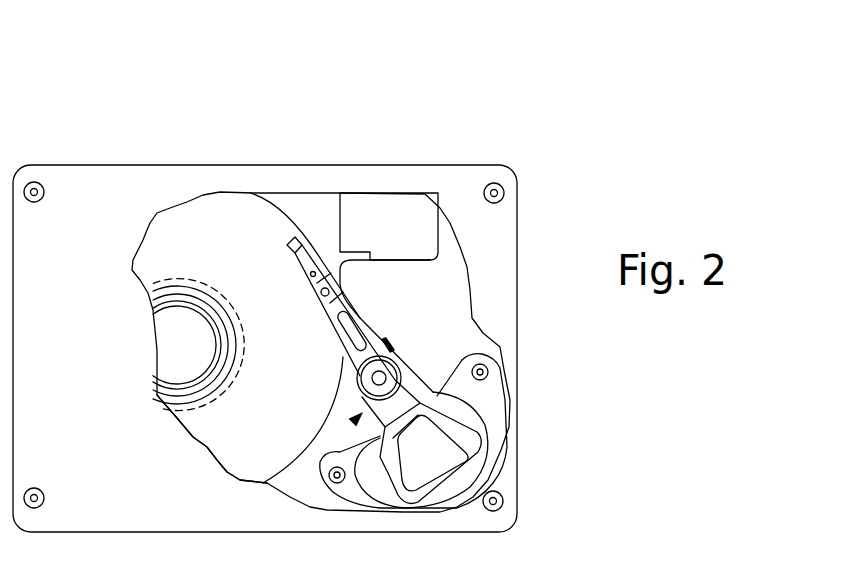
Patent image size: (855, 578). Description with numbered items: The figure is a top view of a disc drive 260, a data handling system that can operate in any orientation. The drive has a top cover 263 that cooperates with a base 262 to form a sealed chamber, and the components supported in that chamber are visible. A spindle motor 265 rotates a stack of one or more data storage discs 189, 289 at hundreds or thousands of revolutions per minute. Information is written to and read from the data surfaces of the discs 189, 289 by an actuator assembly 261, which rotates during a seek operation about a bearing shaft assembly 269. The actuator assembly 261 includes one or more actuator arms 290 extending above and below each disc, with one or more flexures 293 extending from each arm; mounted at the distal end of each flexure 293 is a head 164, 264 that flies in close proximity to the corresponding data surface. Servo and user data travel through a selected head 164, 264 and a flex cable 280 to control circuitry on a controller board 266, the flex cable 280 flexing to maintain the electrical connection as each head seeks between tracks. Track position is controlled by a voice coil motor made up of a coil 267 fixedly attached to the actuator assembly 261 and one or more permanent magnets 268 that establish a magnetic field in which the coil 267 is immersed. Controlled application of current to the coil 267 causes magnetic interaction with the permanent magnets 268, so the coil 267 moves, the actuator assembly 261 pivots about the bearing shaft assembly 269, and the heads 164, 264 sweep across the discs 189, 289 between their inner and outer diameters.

The disc drive 260 is at (572, 163).
The top cover 263 is at (103, 207).
The base 262 is at (302, 213).
The controller board 266 is at (397, 218).
The spindle motor 265 is at (180, 343).
The head 164 is at (289, 243).
The head 264 is at (294, 245).
The flexure 293 is at (305, 263).
The flex cable 280 is at (375, 320).
The actuator arm 290 is at (335, 337).
The bearing shaft assembly 269 is at (345, 354).
The actuator assembly 261 is at (352, 422).
The permanent magnet 268 is at (462, 397).
The coil 267 is at (473, 468).
The data storage disc 289 is at (213, 430).
The data storage disc 189 is at (263, 483).